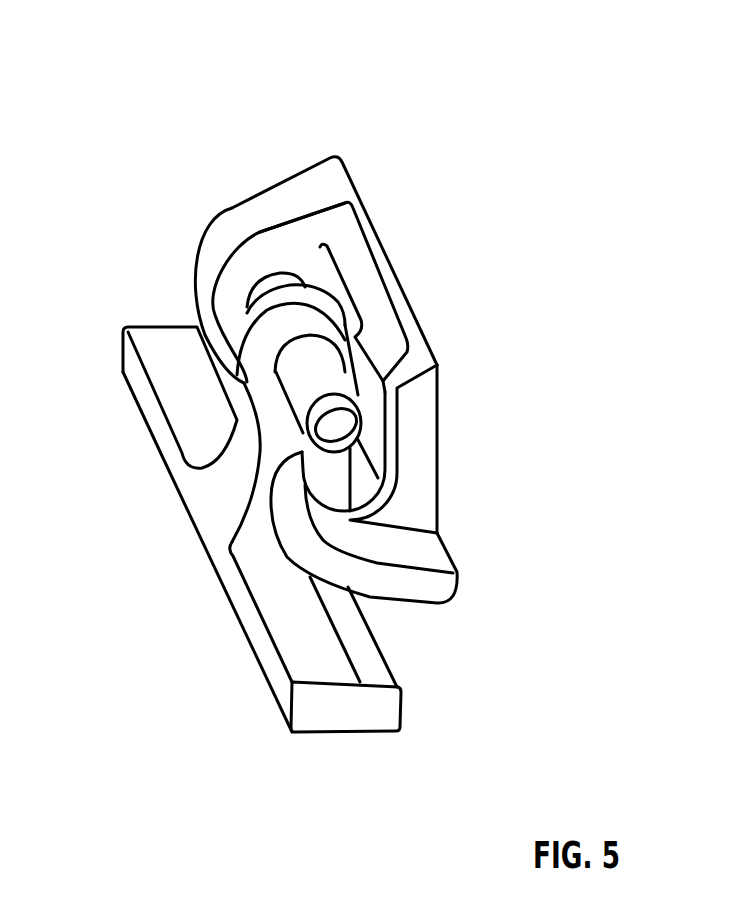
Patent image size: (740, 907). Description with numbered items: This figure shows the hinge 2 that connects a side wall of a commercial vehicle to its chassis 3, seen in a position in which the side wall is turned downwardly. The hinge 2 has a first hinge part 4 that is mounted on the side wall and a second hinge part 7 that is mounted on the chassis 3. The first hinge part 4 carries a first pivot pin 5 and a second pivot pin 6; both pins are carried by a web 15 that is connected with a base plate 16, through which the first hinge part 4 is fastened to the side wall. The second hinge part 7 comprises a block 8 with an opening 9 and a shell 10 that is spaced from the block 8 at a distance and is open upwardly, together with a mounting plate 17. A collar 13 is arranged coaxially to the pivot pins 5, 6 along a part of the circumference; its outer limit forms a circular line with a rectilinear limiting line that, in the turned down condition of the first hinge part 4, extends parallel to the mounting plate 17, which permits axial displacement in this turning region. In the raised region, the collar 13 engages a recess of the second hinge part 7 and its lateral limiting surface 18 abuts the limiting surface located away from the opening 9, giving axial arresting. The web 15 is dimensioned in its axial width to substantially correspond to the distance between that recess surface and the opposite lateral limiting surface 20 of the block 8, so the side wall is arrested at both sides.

The hinge 2 is at (135, 460).
The chassis 3 is at (440, 433).
The first hinge part 4 is at (215, 565).
The first pivot pin 5 is at (327, 240).
The second pivot pin 6 is at (340, 377).
The second hinge part 7 is at (445, 490).
The block 8 is at (215, 218).
The opening 9 is at (270, 268).
The shell 10 is at (342, 540).
The collar 13 is at (250, 330).
The web 15 is at (238, 452).
The base plate 16 is at (333, 722).
The mounting plate 17 is at (385, 270).
The lateral limiting surface 18 is at (320, 327).
The lateral limiting surface 20 is at (243, 213).